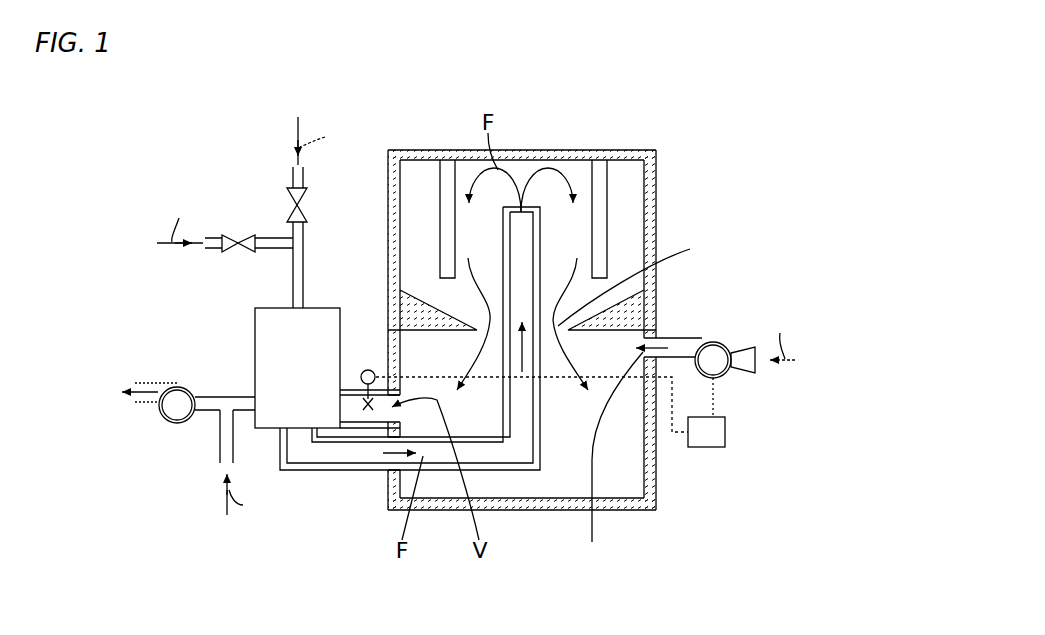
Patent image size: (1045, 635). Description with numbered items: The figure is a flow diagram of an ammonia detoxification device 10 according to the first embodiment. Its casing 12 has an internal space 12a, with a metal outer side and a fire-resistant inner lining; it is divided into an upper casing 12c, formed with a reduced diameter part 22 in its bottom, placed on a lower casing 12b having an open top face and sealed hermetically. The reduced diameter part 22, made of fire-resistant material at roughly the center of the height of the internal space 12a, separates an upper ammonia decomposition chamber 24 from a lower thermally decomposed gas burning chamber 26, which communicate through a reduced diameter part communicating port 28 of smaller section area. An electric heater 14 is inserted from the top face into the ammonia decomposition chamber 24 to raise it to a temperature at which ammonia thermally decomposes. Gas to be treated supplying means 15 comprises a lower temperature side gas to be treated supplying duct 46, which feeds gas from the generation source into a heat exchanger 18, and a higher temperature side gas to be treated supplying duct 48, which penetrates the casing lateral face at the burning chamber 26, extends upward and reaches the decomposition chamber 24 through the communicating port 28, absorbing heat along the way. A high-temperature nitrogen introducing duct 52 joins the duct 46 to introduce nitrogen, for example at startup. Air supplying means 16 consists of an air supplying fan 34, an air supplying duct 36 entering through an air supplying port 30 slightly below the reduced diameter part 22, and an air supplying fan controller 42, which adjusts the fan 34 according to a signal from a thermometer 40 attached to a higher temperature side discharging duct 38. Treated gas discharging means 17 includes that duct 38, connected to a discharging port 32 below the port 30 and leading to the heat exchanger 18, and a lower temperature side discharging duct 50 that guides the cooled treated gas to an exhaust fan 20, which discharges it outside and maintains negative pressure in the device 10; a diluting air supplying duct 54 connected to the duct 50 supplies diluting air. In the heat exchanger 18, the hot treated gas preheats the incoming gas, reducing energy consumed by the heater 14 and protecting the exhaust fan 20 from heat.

The ammonia detoxification device 10 is at (716, 118).
The casing 12 is at (535, 150).
The internal space 12a is at (580, 195).
The lower casing 12b is at (657, 511).
The upper casing 12c is at (655, 196).
The electric heater 14 is at (436, 190).
The gas to be treated supplying means 15 is at (243, 185).
The air supplying means 16 is at (731, 326).
The treated gas discharging means 17 is at (188, 477).
The heat exchanger 18 is at (255, 341).
The exhaust fan 20 is at (178, 387).
The reduced diameter part 22 is at (661, 313).
The ammonia decomposition chamber 24 is at (613, 233).
The thermally decomposed gas burning chamber 26 is at (617, 463).
The reduced diameter part communicating port 28 is at (638, 280).
The air supplying port 30 is at (610, 457).
The discharging port 32 is at (398, 414).
The air supplying fan 34 is at (726, 377).
The air supplying duct 36 is at (672, 340).
The higher temperature side discharging duct 38 is at (377, 426).
The thermometer 40 is at (368, 369).
The air supplying fan controller 42 is at (705, 448).
The lower temperature side gas to be treated supplying duct 46 is at (306, 272).
The higher temperature side gas to be treated supplying duct 48 is at (324, 473).
The lower temperature side discharging duct 50 is at (227, 396).
The high-temperature nitrogen introducing duct 52 is at (280, 250).
The diluting air supplying duct 54 is at (218, 441).